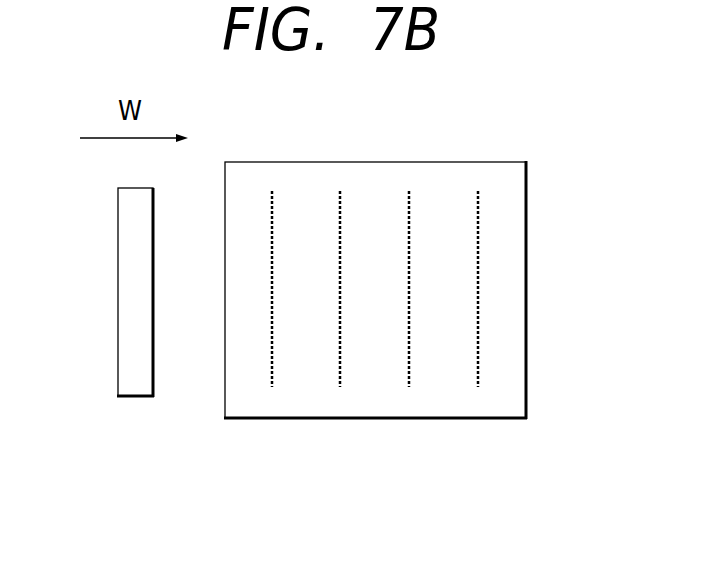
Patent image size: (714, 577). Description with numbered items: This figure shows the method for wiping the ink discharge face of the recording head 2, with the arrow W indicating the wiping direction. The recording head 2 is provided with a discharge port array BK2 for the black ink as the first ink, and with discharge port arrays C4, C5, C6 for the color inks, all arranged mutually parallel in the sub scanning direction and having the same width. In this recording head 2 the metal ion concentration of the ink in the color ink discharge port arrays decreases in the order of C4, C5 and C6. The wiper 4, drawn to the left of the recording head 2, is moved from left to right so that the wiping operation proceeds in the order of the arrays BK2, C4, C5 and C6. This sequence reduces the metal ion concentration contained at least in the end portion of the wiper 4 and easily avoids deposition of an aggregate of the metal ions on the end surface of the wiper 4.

The recording head 2 is at (527, 201).
The wiper 4 is at (133, 398).
The discharge port array for the black ink BK2 is at (272, 226).
The discharge port array for the color ink C4 is at (338, 355).
The discharge port array for the color ink C5 is at (407, 355).
The discharge port array for the color ink C6 is at (478, 355).